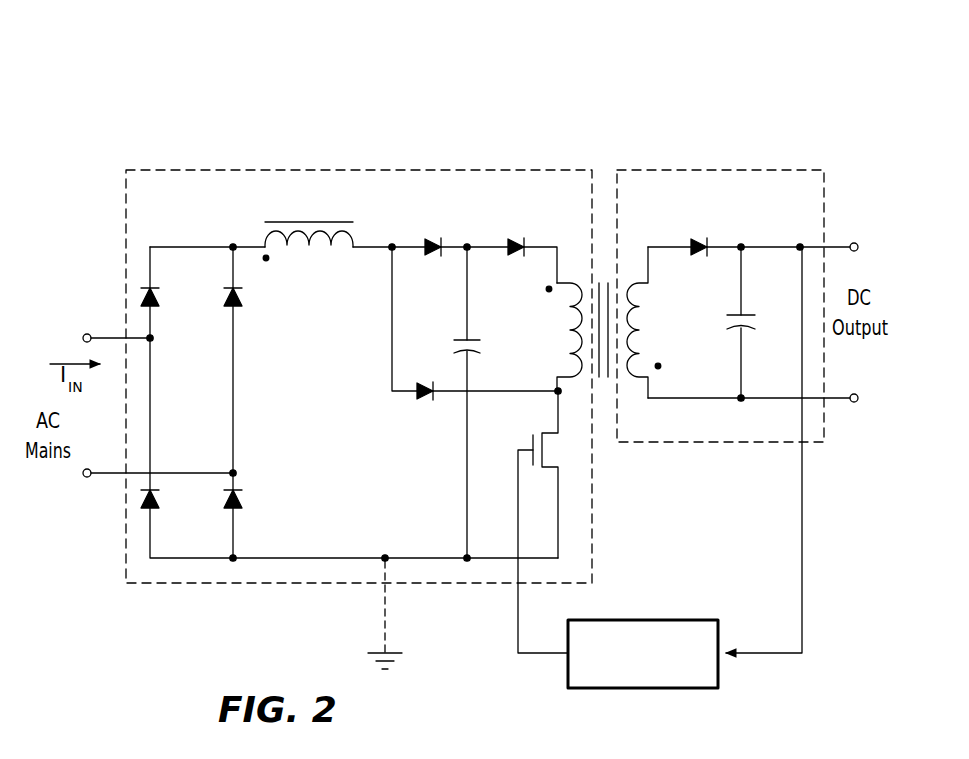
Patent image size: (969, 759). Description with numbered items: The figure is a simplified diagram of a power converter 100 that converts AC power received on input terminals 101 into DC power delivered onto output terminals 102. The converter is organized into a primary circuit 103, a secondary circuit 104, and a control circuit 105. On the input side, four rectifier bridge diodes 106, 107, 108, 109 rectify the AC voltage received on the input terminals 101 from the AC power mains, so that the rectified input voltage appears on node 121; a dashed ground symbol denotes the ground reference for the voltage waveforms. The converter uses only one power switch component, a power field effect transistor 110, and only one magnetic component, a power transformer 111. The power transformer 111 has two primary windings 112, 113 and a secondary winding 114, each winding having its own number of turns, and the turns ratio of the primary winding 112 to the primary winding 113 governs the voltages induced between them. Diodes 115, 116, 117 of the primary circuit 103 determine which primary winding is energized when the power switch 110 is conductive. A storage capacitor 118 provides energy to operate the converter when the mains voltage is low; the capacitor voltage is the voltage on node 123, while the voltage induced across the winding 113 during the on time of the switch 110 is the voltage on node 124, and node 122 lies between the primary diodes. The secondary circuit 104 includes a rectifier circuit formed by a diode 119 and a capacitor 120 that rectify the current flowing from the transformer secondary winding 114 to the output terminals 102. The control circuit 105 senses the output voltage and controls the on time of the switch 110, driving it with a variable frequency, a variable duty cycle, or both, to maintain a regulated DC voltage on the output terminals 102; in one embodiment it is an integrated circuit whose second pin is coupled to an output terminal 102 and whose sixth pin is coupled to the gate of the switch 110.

The power converter 100 is at (552, 84).
The input terminals 101 is at (85, 333).
The output terminals 102 is at (857, 241).
The primary circuit 103 is at (288, 169).
The secondary circuit 104 is at (774, 169).
The control circuit 105 is at (695, 690).
The rectifier bridge diode 106 is at (157, 296).
The rectifier bridge diode 107 is at (240, 296).
The rectifier bridge diode 108 is at (157, 498).
The rectifier bridge diode 109 is at (240, 498).
The power field effect transistor 110 is at (556, 432).
The power transformer 111 is at (352, 207).
The primary winding 112 is at (263, 238).
The primary winding 113 is at (566, 352).
The secondary winding 114 is at (648, 302).
The diode 115 is at (423, 399).
The diode 116 is at (513, 237).
The diode 117 is at (430, 237).
The storage capacitor 118 is at (460, 338).
The rectifier circuit diode 119 is at (699, 238).
The rectifier circuit capacitor 120 is at (746, 312).
The node 121 is at (232, 244).
The voltage node VX 122 is at (393, 244).
The node 123 is at (468, 244).
The node 124 is at (558, 244).